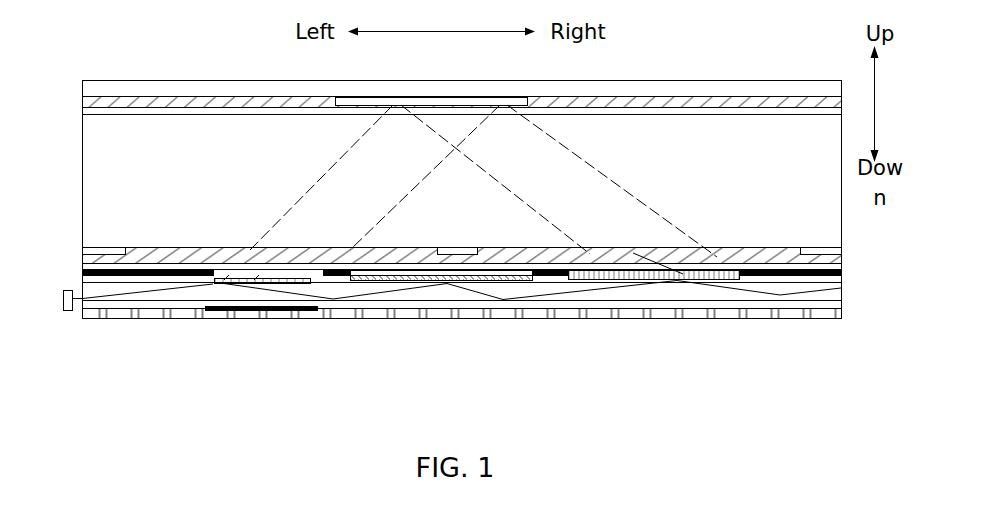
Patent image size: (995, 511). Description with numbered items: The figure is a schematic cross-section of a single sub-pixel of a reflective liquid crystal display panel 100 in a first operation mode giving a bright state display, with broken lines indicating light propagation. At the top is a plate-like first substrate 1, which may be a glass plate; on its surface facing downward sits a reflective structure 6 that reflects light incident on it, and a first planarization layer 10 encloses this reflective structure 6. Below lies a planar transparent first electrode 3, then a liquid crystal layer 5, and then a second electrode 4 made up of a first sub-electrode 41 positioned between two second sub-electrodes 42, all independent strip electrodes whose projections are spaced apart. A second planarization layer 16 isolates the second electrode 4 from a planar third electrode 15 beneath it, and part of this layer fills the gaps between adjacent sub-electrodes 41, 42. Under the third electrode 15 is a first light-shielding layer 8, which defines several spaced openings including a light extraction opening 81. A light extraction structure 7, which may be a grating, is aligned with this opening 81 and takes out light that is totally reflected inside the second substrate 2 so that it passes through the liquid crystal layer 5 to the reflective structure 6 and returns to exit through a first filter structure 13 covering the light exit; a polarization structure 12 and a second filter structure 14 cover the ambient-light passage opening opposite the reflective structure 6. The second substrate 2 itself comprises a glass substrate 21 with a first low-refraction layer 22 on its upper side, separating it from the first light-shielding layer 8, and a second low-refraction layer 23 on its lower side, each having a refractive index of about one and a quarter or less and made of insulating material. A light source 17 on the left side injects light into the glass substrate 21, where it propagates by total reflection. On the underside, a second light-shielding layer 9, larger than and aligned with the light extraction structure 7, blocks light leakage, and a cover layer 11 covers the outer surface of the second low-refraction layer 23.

The reflective liquid crystal display panel 100 is at (745, 40).
The first substrate 1 is at (148, 88).
The first planarization layer 10 is at (122, 103).
The reflective structure 6 is at (430, 99).
The first electrode 3 is at (132, 111).
The liquid crystal layer 5 is at (128, 143).
The second electrode 4 is at (445, 223).
The first sub-electrode 41 is at (443, 250).
The second sub-electrode 42 is at (108, 250).
The third electrode 15 is at (118, 266).
The first low-refraction layer 22 is at (812, 278).
The first light-shielding layer 8 is at (214, 280).
The polarization structure 12 is at (480, 268).
The second filter structure 14 is at (490, 270).
The second planarization layer 16 is at (657, 272).
The first filter structure 13 is at (683, 274).
The second substrate 2 is at (498, 308).
The glass substrate 21 is at (803, 292).
The second low-refraction layer 23 is at (797, 300).
The cover layer 11 is at (800, 313).
The second light-shielding layer 9 is at (272, 312).
The light source 17 is at (63, 305).
The light extraction structure 7 is at (227, 276).
The light extraction opening 81 is at (257, 275).